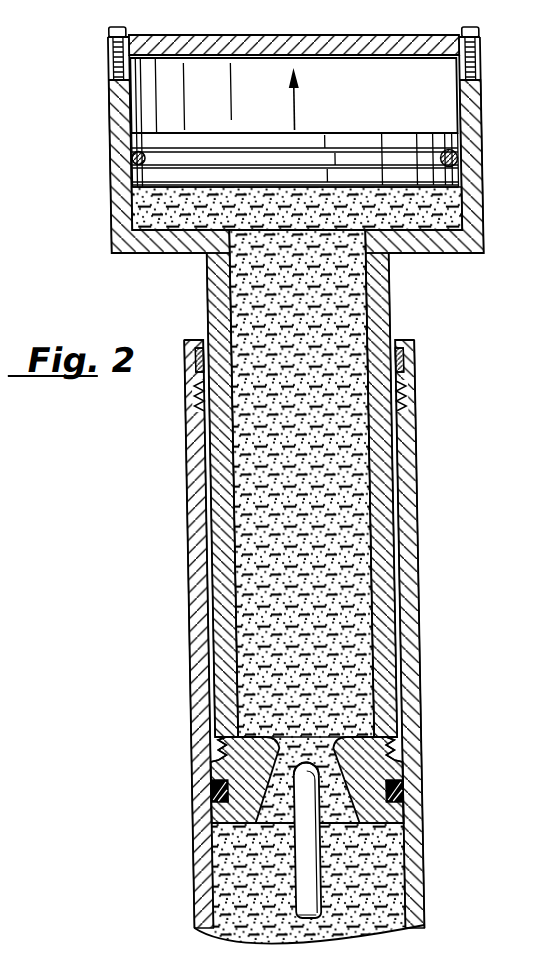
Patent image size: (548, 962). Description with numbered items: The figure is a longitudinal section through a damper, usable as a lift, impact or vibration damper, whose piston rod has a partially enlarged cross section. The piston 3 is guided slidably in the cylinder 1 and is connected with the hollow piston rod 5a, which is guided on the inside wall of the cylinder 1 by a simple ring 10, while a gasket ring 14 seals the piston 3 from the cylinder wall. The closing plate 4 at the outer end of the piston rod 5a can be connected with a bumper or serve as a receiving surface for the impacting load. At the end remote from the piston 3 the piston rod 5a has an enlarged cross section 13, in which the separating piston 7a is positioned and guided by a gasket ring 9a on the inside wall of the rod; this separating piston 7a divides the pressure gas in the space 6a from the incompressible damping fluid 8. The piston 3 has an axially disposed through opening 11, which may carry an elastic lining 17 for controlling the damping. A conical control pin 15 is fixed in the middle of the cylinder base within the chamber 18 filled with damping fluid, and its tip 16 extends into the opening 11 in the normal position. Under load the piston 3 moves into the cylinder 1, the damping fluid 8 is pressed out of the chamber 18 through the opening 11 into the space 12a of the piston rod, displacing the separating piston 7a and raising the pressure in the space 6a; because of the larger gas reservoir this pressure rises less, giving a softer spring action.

The cylinder 1 is at (305, 472).
The piston 3 is at (382, 815).
The closing plate 4 is at (264, 44).
The piston rod 5a is at (217, 288).
The space 6a is at (452, 98).
The separating piston 7a is at (154, 173).
The damping fluid 8 is at (455, 208).
The gasket ring 9a is at (464, 157).
The ring 10 is at (416, 355).
The through opening 11 is at (294, 750).
The space 12a is at (347, 500).
The enlarged cross section 13 is at (124, 209).
The gasket ring 14 is at (394, 782).
The control pin 15 is at (306, 898).
The tip 16 is at (302, 762).
The elastic lining 17 is at (396, 763).
The chamber 18 is at (381, 876).